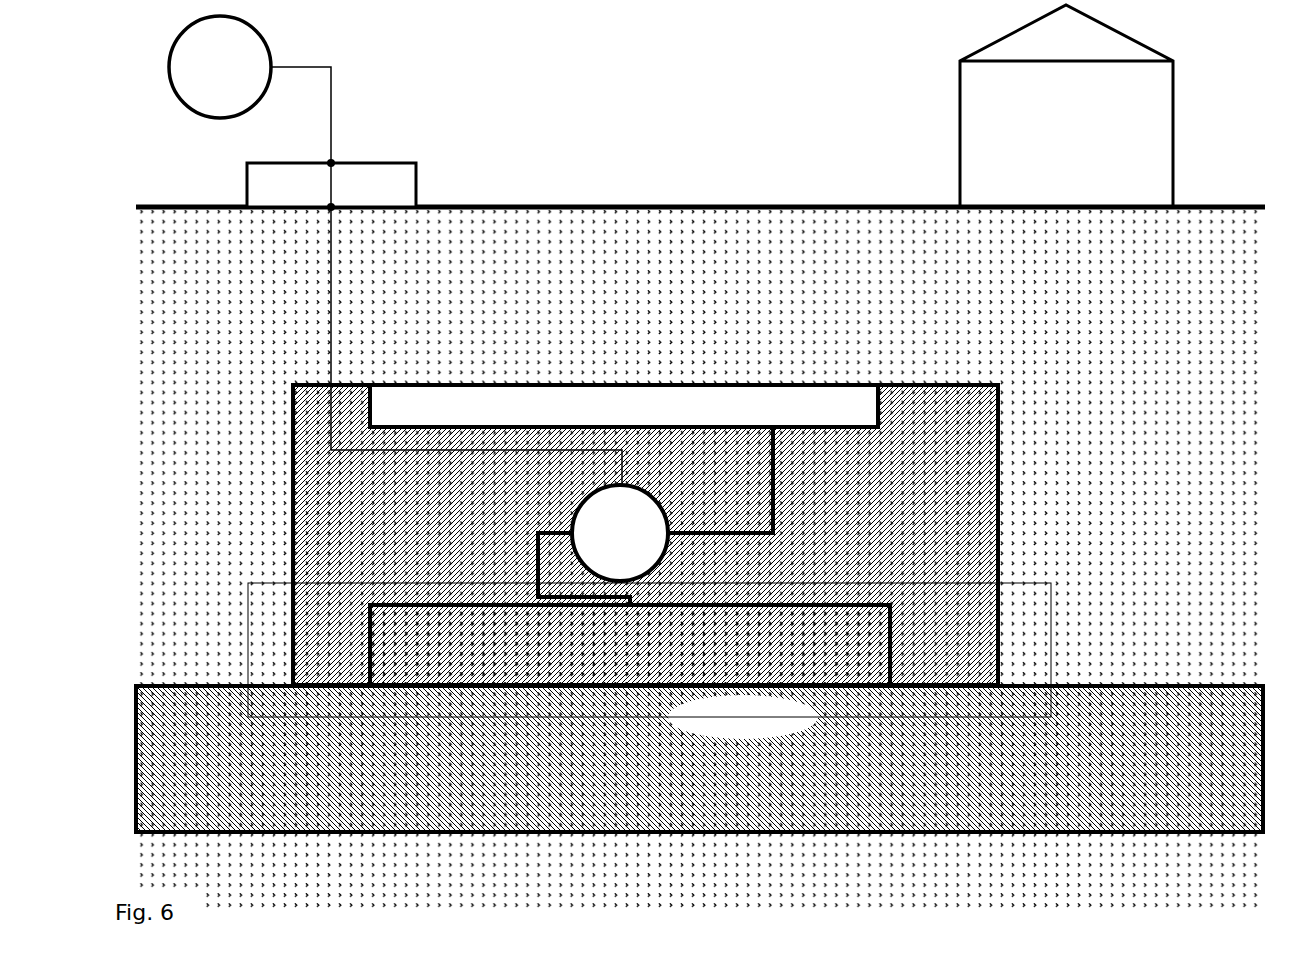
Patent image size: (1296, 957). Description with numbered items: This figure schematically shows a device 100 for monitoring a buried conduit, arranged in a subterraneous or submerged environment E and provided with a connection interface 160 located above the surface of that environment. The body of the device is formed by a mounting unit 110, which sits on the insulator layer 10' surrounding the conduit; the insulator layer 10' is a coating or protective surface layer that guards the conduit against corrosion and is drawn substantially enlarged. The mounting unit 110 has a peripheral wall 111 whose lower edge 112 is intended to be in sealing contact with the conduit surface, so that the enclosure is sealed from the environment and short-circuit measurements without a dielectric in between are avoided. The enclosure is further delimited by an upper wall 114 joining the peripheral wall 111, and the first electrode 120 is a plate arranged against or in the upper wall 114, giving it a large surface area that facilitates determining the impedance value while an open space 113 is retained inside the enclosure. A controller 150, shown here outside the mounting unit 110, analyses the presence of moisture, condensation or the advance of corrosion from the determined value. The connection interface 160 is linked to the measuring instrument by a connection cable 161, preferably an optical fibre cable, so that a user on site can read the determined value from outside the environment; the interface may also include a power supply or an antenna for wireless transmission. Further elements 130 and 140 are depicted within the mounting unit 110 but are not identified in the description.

The device 100 is at (782, 78).
The controller 150 is at (220, 67).
The connection interface 160 is at (400, 183).
The connection cable 161 is at (340, 342).
The top chamber / channel 130 is at (878, 385).
The environment E is at (1099, 307).
The mounting unit 110 is at (292, 492).
The pump / circulation device 140 is at (655, 516).
The upper wall 114 is at (1058, 650).
The peripheral wall 111 is at (286, 662).
The first electrode 120 is at (631, 623).
The insulator layer 10' is at (677, 741).
The open space 113 is at (636, 694).
The lower edge 112 is at (955, 699).